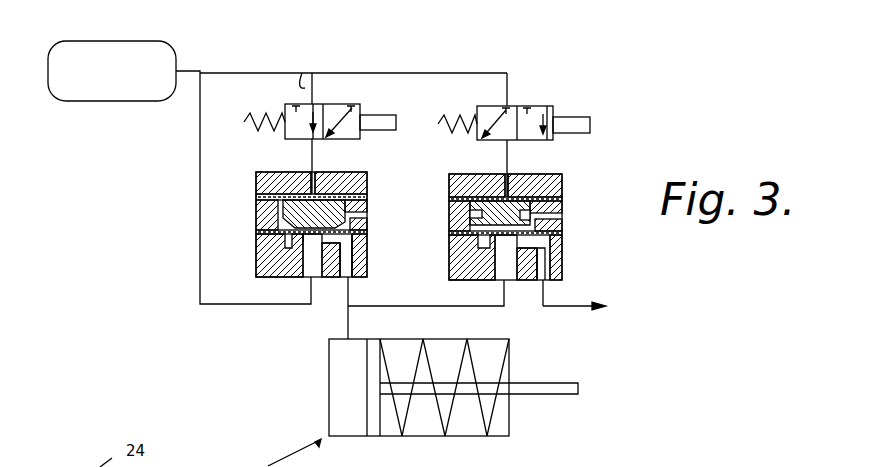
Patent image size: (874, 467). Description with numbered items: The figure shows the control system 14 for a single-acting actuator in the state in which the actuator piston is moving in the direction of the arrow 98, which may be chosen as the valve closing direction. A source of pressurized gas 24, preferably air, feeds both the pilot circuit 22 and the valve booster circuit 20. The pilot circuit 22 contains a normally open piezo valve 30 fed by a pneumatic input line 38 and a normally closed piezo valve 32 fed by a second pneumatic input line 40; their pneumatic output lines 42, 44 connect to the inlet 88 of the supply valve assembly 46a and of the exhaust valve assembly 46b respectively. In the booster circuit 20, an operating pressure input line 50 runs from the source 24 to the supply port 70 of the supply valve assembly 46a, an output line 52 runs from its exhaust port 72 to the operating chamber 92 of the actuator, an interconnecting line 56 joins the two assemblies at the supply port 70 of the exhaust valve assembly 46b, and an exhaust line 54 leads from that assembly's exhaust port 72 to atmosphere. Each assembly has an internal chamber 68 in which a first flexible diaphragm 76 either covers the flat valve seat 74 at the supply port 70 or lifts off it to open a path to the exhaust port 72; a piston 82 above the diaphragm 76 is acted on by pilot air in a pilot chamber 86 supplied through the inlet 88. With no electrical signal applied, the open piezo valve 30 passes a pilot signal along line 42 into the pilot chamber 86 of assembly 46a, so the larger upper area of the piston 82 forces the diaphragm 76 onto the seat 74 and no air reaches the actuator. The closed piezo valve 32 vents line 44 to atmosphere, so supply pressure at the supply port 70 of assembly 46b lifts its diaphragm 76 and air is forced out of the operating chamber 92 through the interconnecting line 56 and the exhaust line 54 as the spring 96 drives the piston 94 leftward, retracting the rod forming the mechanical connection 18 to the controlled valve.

The control system 14 is at (578, 46).
The mechanical connection 18 is at (566, 391).
The valve booster circuit 20 is at (521, 313).
The pilot circuit 22 is at (458, 73).
The source of pressurized gas 24 is at (113, 48).
The normally open piezo valve 30 is at (360, 109).
The normally closed piezo valve 32 is at (553, 110).
The pneumatic input line 38 is at (298, 72).
The second pneumatic input line 40 is at (508, 92).
The pneumatic output line 42 is at (316, 154).
The pneumatic output line 44 is at (510, 157).
The supply valve assembly 46a is at (424, 234).
The exhaust valve assembly 46b is at (565, 223).
The operating pressure input line 50 is at (200, 192).
The output line 52 is at (352, 295).
The exhaust line 54 is at (545, 296).
The interconnecting line 56 is at (415, 306).
The internal chamber 68 is at (275, 250).
The supply port 70 is at (310, 273).
The exhaust port 72 is at (344, 283).
The valve seat 74 is at (462, 254).
The first flexible diaphragm 76 is at (340, 241).
The piston 82 is at (258, 222).
The pilot chamber 86 is at (297, 193).
The inlet 88 is at (311, 185).
The operating chamber 92 is at (332, 378).
The piston 94 is at (373, 418).
The spring 96 is at (493, 420).
The arrow 98 is at (542, 367).